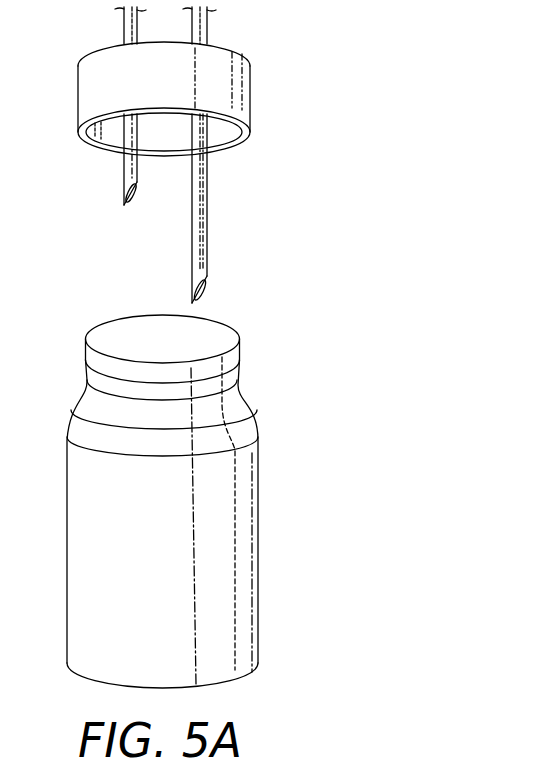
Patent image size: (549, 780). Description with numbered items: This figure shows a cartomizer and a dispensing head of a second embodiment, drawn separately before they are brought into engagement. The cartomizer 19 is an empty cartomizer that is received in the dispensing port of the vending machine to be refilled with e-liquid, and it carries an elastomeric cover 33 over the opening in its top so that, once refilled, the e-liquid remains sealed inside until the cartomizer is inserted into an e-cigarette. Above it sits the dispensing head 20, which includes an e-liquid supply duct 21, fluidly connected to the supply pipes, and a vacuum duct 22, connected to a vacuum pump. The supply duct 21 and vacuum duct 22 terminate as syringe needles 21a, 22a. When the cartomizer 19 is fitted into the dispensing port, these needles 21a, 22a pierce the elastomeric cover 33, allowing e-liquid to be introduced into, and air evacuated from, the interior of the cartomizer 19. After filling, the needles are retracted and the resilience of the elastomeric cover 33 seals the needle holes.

The cartomizer 19 is at (68, 516).
The dispensing head 20 is at (251, 90).
The e-liquid supply duct 21 is at (207, 23).
The syringe needle 21a is at (208, 292).
The vacuum duct 22 is at (124, 24).
The syringe needle 22a is at (123, 205).
The elastomeric cover 33 is at (121, 326).